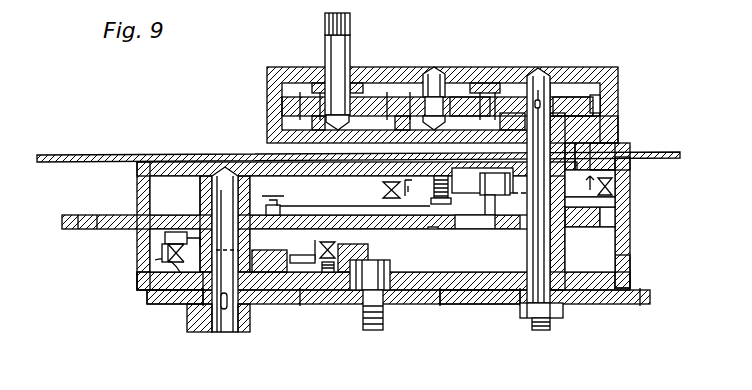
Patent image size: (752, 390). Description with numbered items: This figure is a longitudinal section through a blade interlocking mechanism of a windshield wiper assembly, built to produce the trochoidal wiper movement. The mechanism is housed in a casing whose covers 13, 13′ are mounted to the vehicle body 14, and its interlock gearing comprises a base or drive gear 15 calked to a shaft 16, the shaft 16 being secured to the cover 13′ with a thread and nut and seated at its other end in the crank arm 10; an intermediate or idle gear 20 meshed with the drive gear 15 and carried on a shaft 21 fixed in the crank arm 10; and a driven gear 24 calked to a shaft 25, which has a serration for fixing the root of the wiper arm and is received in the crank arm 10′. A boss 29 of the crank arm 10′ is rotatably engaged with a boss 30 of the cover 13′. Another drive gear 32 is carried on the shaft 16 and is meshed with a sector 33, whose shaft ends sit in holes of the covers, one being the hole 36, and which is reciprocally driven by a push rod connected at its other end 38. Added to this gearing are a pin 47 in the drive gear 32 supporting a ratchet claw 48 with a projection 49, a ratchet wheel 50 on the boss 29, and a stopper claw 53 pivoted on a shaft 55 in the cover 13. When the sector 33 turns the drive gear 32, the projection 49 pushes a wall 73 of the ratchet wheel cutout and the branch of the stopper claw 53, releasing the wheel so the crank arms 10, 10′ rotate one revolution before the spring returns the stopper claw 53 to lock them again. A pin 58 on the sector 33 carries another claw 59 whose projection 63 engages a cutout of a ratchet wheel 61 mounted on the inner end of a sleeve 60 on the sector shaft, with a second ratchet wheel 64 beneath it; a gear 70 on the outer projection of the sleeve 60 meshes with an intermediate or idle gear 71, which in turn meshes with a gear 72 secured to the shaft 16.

The crank arm 10 is at (618, 82).
The crank arm 10′ is at (617, 130).
The cover 13 is at (630, 206).
The cover 13′ is at (630, 268).
The vehicle body 14 is at (667, 150).
The base or drive gear 15 is at (575, 97).
The shaft 16 is at (572, 280).
The intermediate or idle gear 20 is at (470, 97).
The shaft 21 is at (437, 88).
The driven gear 24 is at (300, 110).
The shaft 25 is at (345, 50).
The boss 29 is at (632, 199).
The boss 30 is at (630, 160).
The drive gear 32 is at (580, 228).
The sector 33 is at (423, 224).
The hole 36 is at (227, 330).
The other end 38 is at (88, 229).
The pin 47 is at (478, 304).
The ratchet claw 48 is at (465, 206).
The projection 49 is at (345, 258).
The ratchet wheel 50 is at (578, 194).
The stopper claw 53 is at (460, 223).
The shaft 55 is at (430, 192).
The pin 58 is at (290, 212).
The claw 59 is at (300, 212).
The sleeve 60 is at (188, 316).
The ratchet wheel 61 is at (193, 214).
The projection 63 is at (267, 210).
The second ratchet wheel 64 is at (143, 292).
The gear 70 is at (280, 300).
The intermediate or idle gear 71 is at (342, 304).
The gear 72 is at (463, 304).
The wall 73 is at (472, 208).